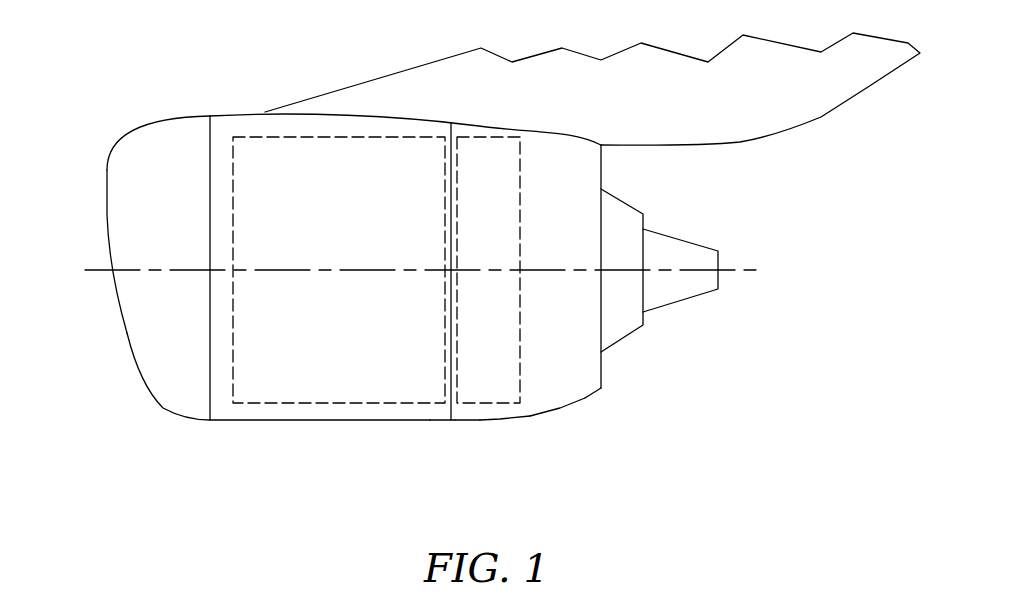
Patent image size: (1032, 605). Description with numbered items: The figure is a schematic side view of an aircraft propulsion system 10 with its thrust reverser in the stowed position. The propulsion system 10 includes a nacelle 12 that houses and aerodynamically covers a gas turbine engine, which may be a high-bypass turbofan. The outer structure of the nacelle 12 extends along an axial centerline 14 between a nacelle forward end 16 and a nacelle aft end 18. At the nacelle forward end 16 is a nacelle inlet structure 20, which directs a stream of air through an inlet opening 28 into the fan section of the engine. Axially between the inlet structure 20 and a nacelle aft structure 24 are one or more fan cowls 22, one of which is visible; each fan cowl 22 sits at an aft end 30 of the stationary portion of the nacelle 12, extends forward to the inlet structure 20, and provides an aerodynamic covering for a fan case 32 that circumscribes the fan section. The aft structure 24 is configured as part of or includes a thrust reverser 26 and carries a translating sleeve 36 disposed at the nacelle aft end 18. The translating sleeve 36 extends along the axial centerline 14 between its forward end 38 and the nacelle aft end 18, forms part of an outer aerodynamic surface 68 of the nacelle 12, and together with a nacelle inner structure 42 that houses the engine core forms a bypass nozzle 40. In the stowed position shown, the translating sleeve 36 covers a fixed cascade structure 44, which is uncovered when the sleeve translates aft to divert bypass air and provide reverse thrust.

The aircraft propulsion system 10 is at (117, 72).
The nacelle 12 is at (245, 110).
The axial centerline 14 is at (762, 274).
The nacelle forward end 16 is at (108, 165).
The nacelle aft end 18 is at (602, 167).
The nacelle inlet structure 20 is at (162, 411).
The fan cowl 22 is at (215, 425).
The nacelle aft structure 24 is at (551, 421).
The thrust reverser 26 is at (447, 431).
The inlet opening 28 is at (108, 232).
The aft end of stationary portion 30 is at (452, 410).
The fan case 32 is at (258, 404).
The translating sleeve 36 is at (584, 402).
The forward end of translating sleeve 38 is at (454, 420).
The bypass nozzle 40 is at (604, 372).
The nacelle inner structure 42 is at (636, 333).
The fixed cascade structure 44 is at (480, 137).
The outer aerodynamic surface 68 is at (517, 420).